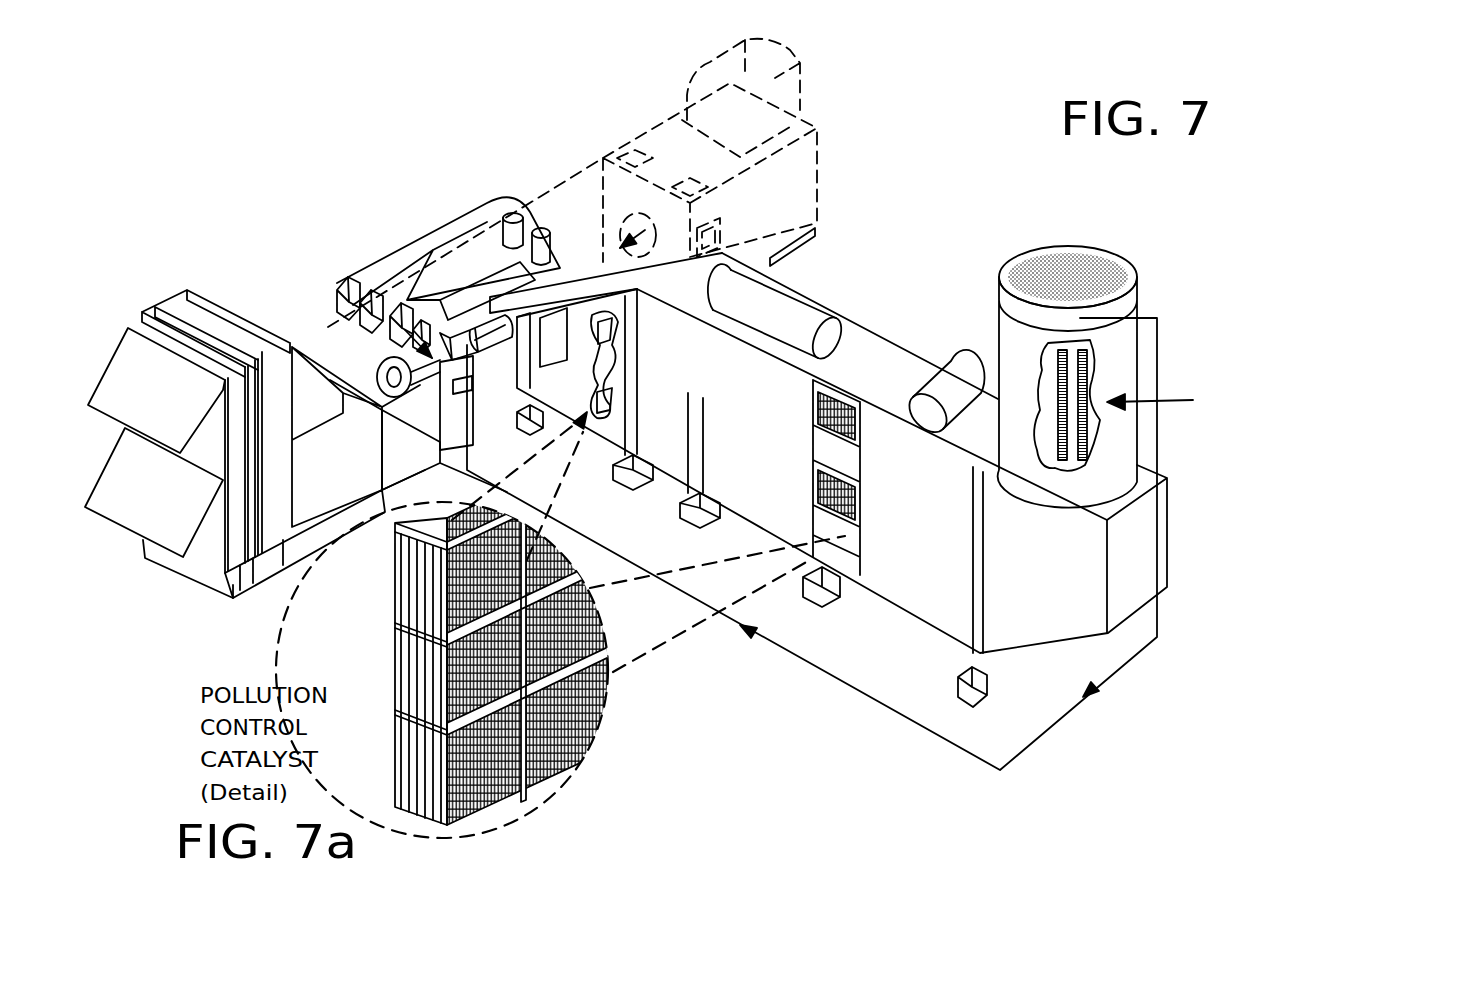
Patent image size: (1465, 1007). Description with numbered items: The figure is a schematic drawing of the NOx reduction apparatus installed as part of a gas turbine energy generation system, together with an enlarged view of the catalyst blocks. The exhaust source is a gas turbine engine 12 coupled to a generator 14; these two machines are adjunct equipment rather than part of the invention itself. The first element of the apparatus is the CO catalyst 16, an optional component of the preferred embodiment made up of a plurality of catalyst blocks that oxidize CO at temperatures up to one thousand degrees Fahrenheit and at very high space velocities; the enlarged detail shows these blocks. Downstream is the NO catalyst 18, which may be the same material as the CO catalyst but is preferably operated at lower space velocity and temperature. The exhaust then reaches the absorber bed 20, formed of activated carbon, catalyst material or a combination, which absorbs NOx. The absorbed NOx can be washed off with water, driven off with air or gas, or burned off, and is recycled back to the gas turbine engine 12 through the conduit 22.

The gas turbine engine 12 is at (357, 353).
The generator 14 is at (667, 153).
The CO catalyst 16 is at (605, 312).
The NO catalyst 18 is at (885, 358).
The absorber bed 20 is at (1057, 243).
The conduit 22 is at (1167, 548).